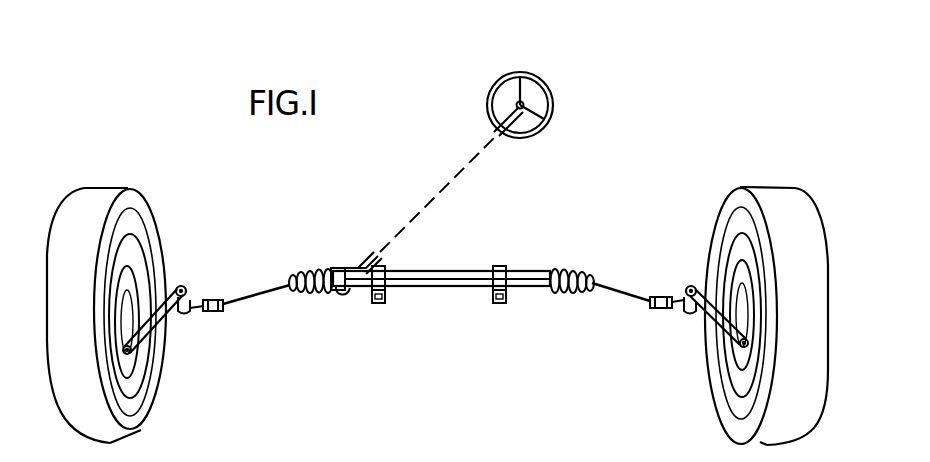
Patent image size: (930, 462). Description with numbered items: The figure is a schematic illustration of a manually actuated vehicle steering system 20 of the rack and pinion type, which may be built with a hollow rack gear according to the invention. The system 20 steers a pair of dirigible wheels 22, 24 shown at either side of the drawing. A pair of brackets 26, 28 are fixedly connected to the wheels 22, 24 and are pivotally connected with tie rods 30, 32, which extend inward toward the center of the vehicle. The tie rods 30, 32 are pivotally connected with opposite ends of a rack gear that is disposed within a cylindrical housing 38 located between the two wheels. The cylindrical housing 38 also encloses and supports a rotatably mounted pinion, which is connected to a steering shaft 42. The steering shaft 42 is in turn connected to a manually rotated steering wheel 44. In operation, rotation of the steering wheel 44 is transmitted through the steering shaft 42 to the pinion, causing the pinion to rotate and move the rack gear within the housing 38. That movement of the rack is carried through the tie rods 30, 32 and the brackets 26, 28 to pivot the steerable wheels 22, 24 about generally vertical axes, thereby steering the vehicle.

The vehicle steering system 20 is at (687, 115).
The dirigible wheel 22 is at (130, 200).
The dirigible wheel 24 is at (800, 226).
The bracket 26 is at (170, 315).
The bracket 28 is at (707, 320).
The tie rod 30 is at (242, 296).
The tie rod 32 is at (614, 296).
The cylindrical housing 38 is at (536, 271).
The steering shaft 42 is at (377, 256).
The steering wheel 44 is at (550, 96).